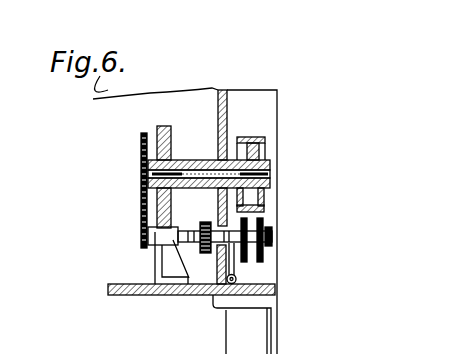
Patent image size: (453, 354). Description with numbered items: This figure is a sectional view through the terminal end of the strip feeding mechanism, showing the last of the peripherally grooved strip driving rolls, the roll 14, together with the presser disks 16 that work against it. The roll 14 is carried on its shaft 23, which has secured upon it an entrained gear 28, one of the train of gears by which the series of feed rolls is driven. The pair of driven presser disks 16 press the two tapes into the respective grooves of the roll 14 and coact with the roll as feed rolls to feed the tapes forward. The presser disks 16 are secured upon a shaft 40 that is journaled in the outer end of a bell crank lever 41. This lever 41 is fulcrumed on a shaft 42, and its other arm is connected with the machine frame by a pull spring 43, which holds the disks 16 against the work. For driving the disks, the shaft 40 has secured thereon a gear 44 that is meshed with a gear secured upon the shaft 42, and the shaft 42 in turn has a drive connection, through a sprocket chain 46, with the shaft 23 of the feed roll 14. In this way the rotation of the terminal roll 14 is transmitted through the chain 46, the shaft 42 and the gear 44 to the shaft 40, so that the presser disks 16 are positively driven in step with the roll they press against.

The strip driving roll 14 is at (265, 140).
The presser disks 16 is at (245, 250).
The shaft 23 is at (266, 173).
The gear 28 is at (171, 141).
The shaft 40 is at (272, 237).
The bell crank lever 41 is at (229, 265).
The shaft 42 is at (176, 246).
The pull spring 43 is at (232, 296).
The gear 44 is at (200, 227).
The sprocket chain 46 is at (141, 202).